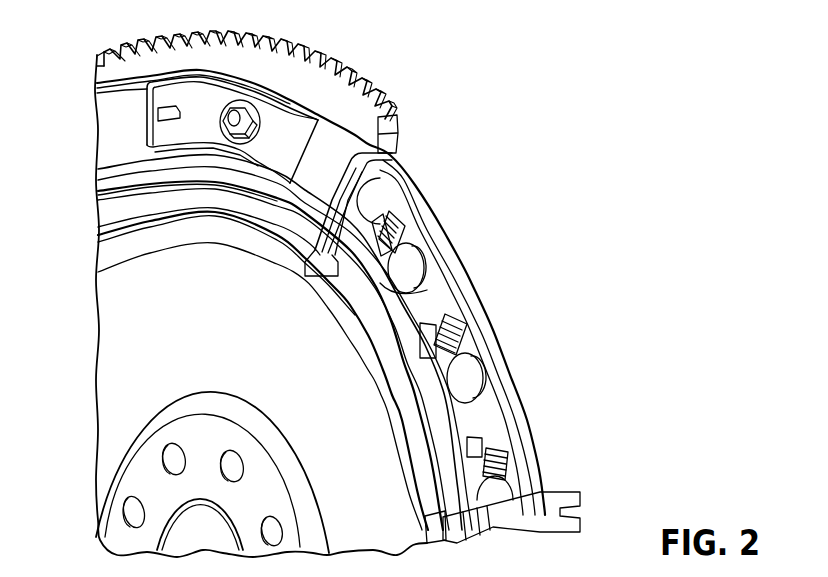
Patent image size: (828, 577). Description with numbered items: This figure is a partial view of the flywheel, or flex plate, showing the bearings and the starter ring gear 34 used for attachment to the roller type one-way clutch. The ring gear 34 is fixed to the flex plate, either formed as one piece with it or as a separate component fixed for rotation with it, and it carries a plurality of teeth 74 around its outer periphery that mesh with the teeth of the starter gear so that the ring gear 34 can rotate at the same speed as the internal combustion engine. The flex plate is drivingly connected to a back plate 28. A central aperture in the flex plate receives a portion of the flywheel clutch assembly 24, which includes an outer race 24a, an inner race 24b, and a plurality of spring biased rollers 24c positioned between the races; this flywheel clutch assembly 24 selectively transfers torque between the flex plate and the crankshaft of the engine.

The flywheel clutch assembly 24 is at (311, 339).
The outer race 24a is at (470, 437).
The inner race 24b is at (410, 303).
The spring biased rollers 24c is at (463, 377).
The back plate 28 is at (137, 328).
The starter ring gear 34 is at (320, 103).
The teeth 74 is at (387, 113).